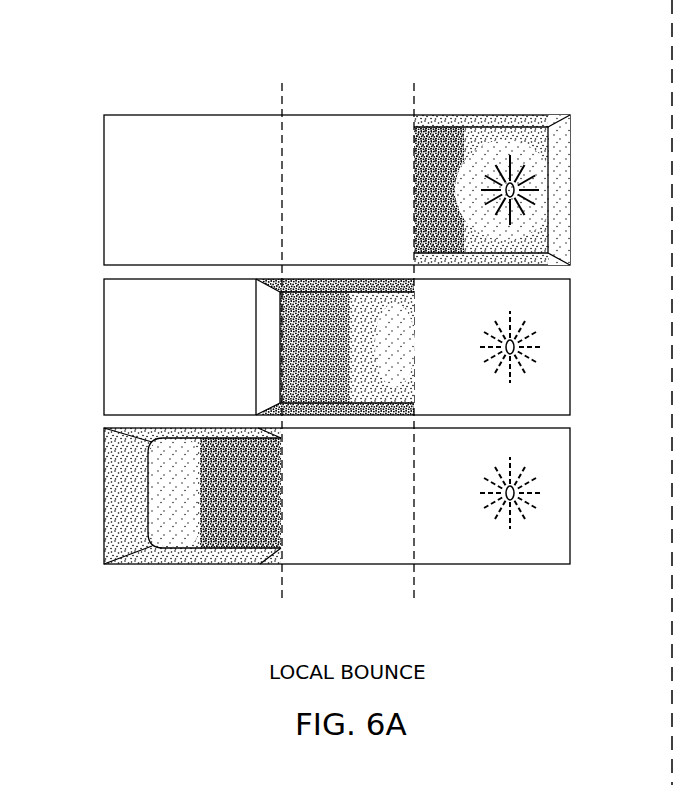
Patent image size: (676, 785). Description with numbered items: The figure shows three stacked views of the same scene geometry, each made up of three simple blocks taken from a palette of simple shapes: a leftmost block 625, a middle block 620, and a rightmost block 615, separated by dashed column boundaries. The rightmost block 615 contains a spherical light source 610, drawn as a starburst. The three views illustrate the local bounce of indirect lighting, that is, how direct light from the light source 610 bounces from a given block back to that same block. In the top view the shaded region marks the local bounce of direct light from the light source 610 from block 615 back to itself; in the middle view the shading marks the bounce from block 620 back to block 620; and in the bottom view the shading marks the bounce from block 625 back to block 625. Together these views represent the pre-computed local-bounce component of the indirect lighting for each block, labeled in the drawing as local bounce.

The light source 610 is at (506, 178).
The rightmost block 615 is at (510, 115).
The middle block 620 is at (318, 115).
The leftmost block 625 is at (160, 115).